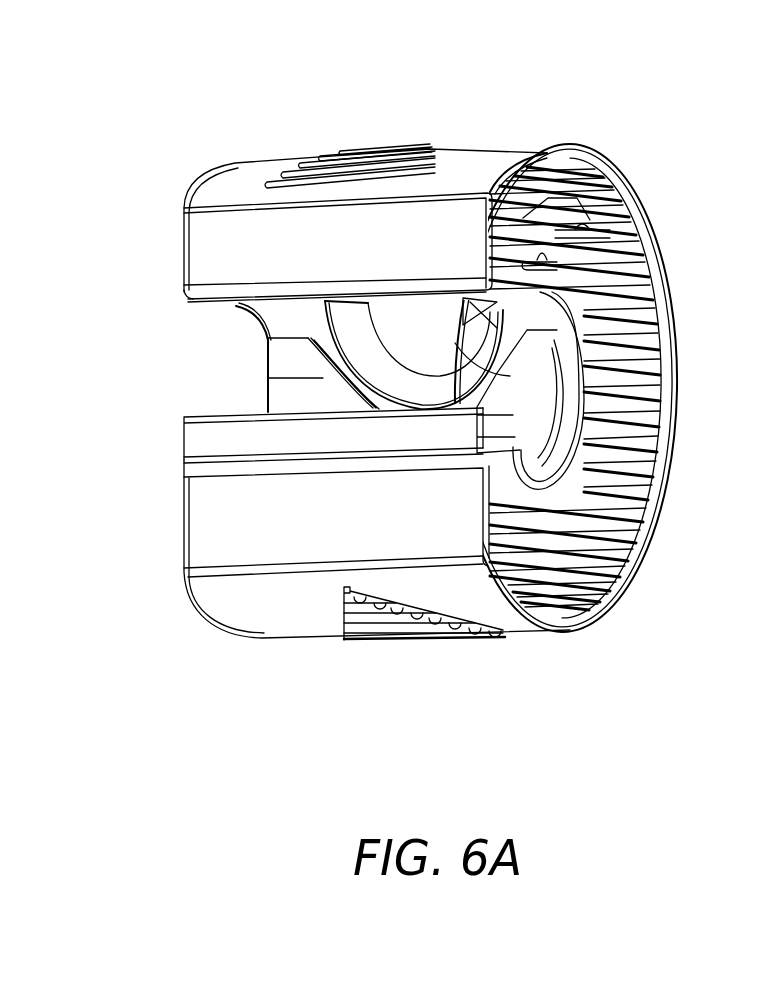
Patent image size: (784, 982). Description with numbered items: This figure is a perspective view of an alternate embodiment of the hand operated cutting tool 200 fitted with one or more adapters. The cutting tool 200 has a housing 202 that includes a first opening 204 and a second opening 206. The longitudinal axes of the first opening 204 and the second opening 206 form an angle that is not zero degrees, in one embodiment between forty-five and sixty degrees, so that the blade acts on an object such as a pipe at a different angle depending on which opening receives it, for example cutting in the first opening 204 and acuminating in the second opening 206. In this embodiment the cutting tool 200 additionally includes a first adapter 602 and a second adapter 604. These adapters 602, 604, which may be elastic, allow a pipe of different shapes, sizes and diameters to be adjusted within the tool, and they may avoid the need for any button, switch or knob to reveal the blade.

The cutting tool 200 is at (432, 365).
The housing 202 is at (529, 645).
The first opening 204 is at (263, 365).
The second opening 206 is at (634, 188).
The first adapter 602 is at (223, 438).
The second adapter 604 is at (505, 376).